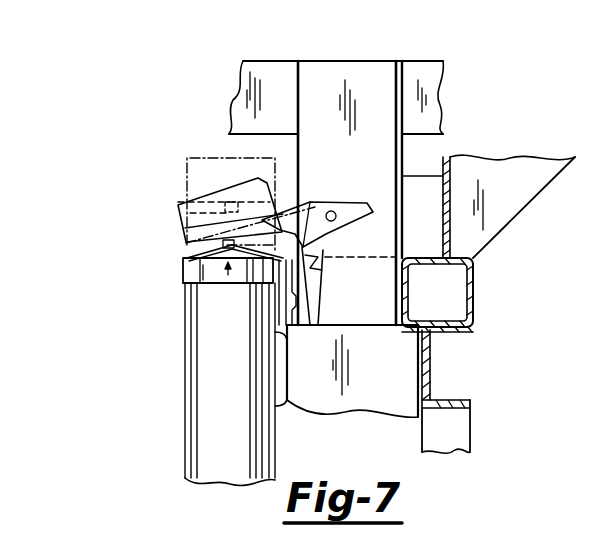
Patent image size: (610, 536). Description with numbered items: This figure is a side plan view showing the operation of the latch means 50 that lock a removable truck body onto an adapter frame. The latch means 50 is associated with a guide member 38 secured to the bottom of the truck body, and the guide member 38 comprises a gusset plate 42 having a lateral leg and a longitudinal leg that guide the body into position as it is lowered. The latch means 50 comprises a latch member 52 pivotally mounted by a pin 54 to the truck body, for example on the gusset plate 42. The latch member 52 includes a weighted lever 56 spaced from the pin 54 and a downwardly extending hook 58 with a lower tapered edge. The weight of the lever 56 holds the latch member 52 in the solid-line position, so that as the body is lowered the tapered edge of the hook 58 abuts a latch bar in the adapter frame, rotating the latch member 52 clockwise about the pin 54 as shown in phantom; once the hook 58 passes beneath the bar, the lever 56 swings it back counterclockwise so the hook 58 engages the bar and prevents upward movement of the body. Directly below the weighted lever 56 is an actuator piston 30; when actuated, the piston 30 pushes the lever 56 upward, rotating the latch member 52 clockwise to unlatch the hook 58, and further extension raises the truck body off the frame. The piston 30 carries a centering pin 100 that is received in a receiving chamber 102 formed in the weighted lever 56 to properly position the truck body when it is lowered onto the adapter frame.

The piston 30 is at (200, 326).
The guide member 38 is at (403, 150).
The first gusset plate 42 is at (372, 243).
The latch means 50 is at (228, 148).
The latch member 52 is at (343, 92).
The pin 54 is at (334, 211).
The weighted lever 56 is at (183, 236).
The hook 58 is at (318, 262).
The centering pin 100 is at (183, 260).
The receiving chamber 102 is at (232, 202).